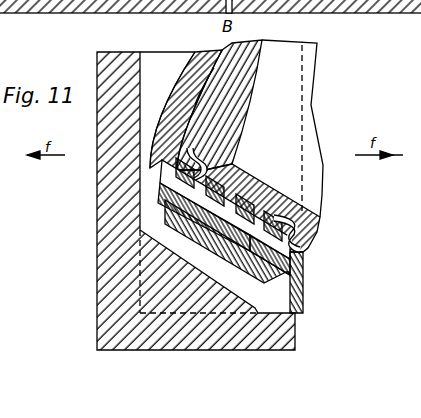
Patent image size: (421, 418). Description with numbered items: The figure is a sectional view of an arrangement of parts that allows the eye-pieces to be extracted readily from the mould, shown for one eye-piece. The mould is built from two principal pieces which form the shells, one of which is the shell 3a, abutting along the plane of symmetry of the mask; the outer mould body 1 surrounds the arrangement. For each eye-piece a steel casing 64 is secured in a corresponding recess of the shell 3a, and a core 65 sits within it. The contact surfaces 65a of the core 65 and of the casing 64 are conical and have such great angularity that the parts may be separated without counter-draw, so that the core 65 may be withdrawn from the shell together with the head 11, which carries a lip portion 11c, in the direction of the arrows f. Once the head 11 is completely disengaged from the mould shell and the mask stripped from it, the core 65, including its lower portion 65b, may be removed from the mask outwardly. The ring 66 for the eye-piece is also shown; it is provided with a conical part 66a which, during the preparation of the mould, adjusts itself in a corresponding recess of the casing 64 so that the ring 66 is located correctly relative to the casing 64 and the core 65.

The housing 1 is at (105, 195).
The shell 3a is at (187, 115).
The head 11 is at (240, 82).
The ring lip 11c is at (207, 92).
The steel casing 64 is at (300, 273).
The core 65 is at (277, 203).
The contact surfaces 65a is at (300, 260).
The seal body lower portion 65b is at (190, 227).
The ring for the eye-piece 66 is at (297, 231).
The conical part 66a is at (302, 243).